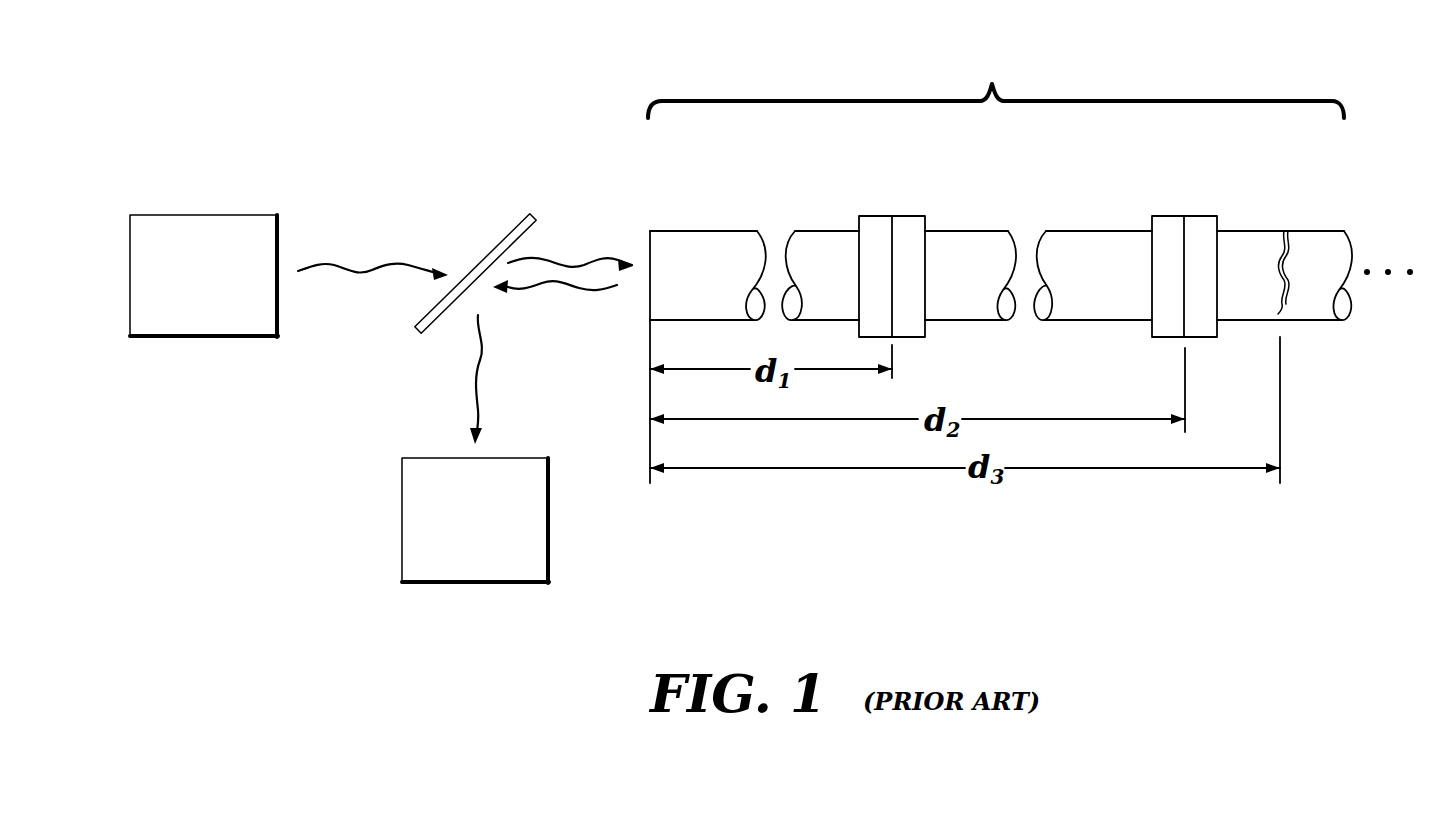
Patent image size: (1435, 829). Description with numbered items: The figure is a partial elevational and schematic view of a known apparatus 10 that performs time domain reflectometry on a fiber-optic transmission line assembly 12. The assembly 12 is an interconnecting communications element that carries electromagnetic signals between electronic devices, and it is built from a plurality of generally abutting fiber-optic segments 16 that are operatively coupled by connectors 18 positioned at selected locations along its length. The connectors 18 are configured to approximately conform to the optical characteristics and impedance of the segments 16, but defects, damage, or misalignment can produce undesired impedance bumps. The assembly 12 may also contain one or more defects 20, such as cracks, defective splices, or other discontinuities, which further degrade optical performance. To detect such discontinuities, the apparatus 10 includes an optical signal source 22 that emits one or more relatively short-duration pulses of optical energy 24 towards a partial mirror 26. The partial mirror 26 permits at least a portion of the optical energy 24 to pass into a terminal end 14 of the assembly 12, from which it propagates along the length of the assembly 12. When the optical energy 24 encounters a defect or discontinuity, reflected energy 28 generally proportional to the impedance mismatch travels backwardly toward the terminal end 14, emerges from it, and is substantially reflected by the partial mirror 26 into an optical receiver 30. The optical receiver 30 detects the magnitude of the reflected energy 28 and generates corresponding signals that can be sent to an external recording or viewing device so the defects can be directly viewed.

The apparatus 10 is at (582, 94).
The fiber-optic transmission line assembly 12 is at (996, 86).
The terminal end 14 is at (650, 318).
The fiber-optic segments 16 is at (704, 231).
The connectors 18 is at (906, 216).
The defects 20 is at (1288, 245).
The optical signal source 22 is at (220, 290).
The optical energy 24 is at (386, 266).
The partial mirror 26 is at (503, 243).
The reflected energy 28 is at (560, 288).
The optical receiver 30 is at (492, 538).